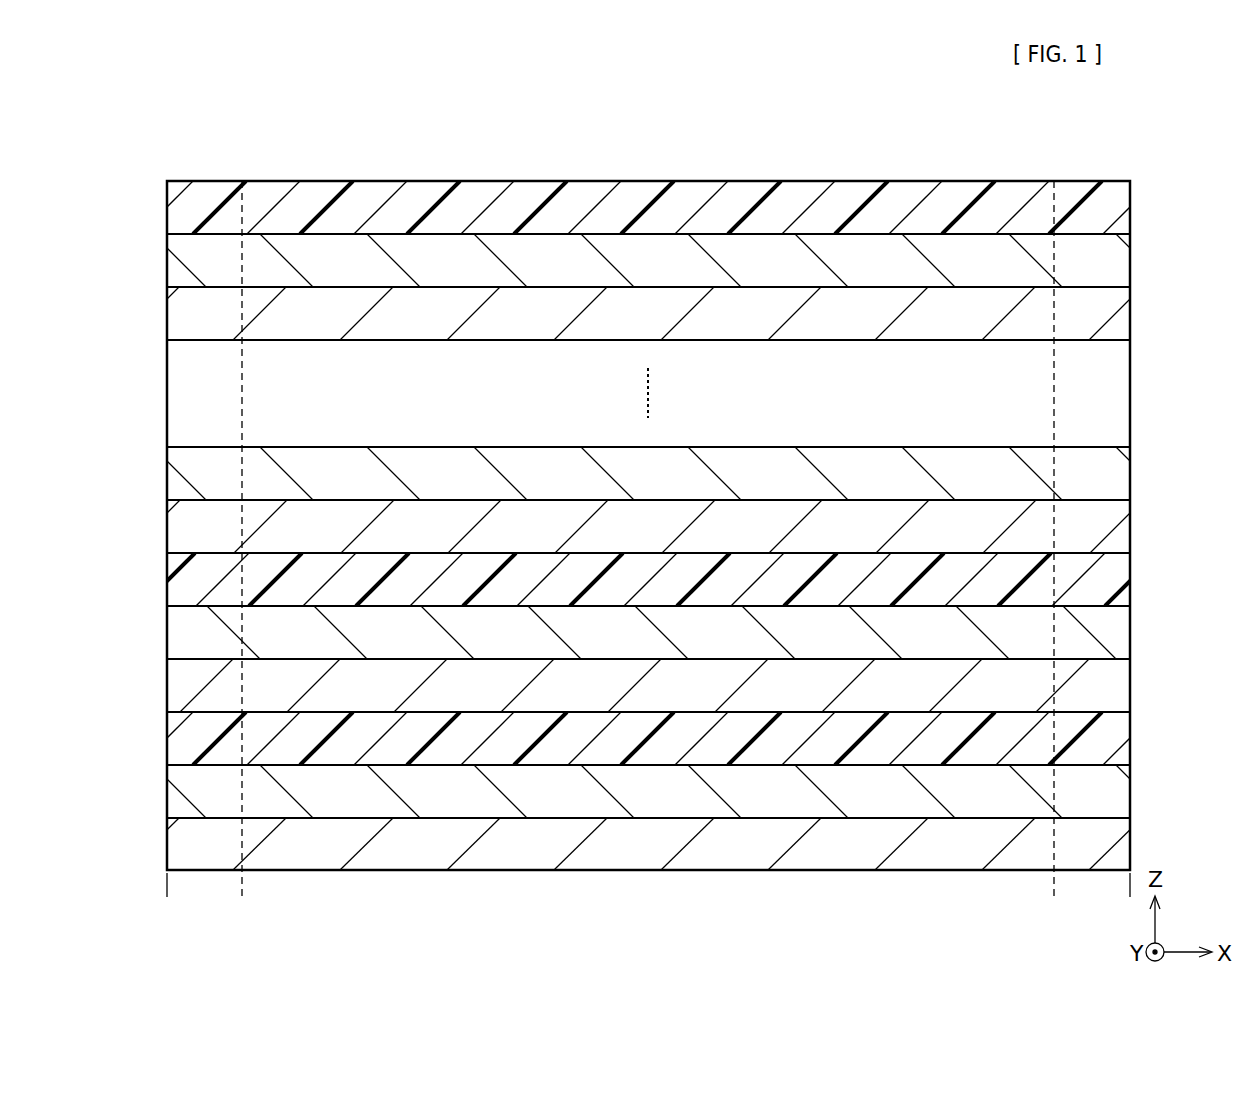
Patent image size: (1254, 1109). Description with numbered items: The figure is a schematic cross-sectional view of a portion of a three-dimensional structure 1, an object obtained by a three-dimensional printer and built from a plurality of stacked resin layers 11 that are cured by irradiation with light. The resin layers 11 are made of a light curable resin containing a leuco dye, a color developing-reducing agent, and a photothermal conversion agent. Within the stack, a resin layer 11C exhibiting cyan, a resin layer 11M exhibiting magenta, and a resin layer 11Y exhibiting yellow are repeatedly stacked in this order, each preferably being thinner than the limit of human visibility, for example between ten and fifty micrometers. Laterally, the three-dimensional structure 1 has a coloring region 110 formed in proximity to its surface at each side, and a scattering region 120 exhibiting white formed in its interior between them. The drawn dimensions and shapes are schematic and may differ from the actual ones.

The three-dimensional structure 1 is at (1035, 167).
The resin layers 11 is at (1203, 195).
The resin layer exhibiting yellow 11Y is at (1133, 211).
The resin layer exhibiting magenta 11M is at (1133, 264).
The resin layer exhibiting cyan 11C is at (1133, 316).
The coloring region 110 is at (242, 892).
The scattering region 120 is at (1054, 892).